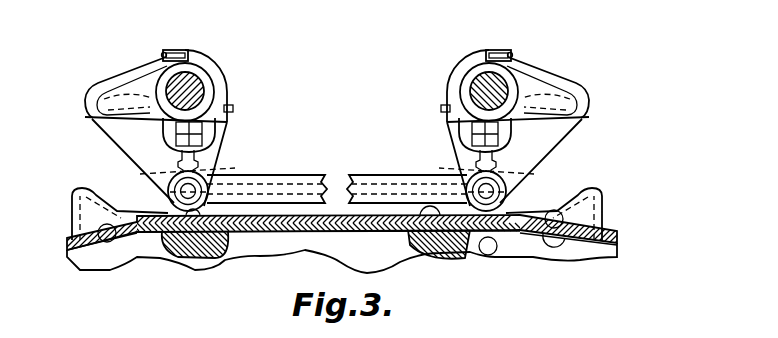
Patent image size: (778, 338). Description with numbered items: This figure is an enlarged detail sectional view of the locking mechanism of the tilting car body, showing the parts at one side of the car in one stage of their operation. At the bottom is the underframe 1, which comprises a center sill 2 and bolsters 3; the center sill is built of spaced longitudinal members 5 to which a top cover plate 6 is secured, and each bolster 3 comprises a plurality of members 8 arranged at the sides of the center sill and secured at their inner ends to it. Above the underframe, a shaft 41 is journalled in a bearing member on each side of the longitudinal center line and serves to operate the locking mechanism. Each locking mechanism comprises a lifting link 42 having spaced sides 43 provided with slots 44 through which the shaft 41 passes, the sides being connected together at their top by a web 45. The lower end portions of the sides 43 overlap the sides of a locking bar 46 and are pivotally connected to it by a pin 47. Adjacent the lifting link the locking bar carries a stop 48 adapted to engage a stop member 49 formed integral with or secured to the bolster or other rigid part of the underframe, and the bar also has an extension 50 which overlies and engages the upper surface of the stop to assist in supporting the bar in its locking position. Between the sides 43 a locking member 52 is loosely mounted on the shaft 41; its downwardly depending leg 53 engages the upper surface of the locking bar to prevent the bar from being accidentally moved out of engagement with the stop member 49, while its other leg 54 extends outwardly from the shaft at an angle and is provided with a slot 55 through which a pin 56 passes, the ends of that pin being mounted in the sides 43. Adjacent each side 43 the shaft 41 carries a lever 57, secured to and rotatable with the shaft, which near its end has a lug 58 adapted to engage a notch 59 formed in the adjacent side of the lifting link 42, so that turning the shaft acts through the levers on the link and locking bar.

The underframe 1 is at (300, 240).
The center sill 2 is at (383, 238).
The bolster 3 is at (537, 237).
The longitudinal member 5 is at (217, 253).
The top cover plate 6 is at (347, 230).
The bolster member 8 is at (112, 252).
The shaft 41 is at (197, 87).
The lifting link 42 is at (205, 110).
The side 43 is at (220, 133).
The slot 44 is at (190, 125).
The web 45 is at (164, 52).
The locking bar 46 is at (285, 188).
The pin 47 is at (173, 188).
The stop 48 is at (150, 220).
The stop member 49 is at (82, 197).
The extension 50 is at (130, 203).
The locking member 52 is at (232, 109).
The leg 53 is at (185, 156).
The leg 54 is at (130, 82).
The slot 55 is at (148, 85).
The pin 56 is at (192, 52).
The lever 57 is at (165, 112).
The lug 58 is at (100, 98).
The notch 59 is at (90, 115).